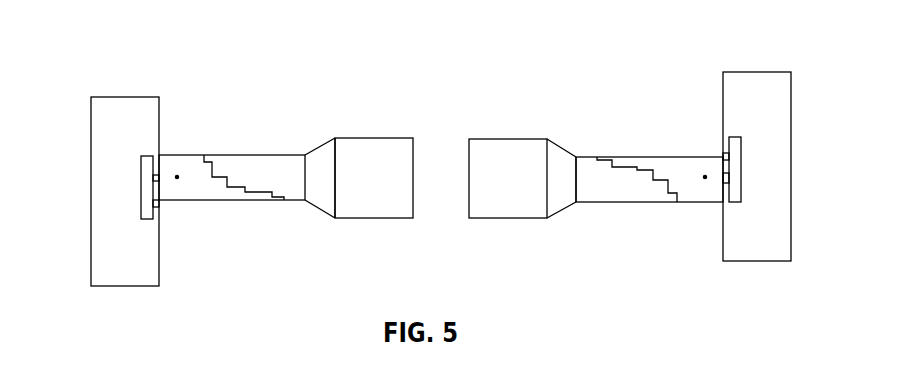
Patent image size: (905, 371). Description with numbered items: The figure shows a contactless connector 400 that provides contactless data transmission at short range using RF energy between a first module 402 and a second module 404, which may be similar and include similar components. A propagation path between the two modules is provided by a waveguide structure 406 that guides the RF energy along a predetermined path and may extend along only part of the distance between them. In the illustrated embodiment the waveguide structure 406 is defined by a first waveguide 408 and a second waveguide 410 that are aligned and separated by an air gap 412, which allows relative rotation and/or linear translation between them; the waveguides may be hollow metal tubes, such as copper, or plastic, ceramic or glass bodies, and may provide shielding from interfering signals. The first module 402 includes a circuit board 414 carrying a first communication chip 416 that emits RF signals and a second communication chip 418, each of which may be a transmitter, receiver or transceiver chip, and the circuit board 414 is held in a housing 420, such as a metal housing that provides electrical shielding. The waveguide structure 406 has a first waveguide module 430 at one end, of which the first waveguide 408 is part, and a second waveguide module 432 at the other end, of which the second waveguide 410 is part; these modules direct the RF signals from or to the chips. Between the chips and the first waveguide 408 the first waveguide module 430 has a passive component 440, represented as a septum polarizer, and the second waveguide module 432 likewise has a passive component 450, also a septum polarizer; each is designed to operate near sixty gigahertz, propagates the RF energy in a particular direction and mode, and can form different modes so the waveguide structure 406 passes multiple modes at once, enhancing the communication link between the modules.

The contactless connector 400 is at (543, 57).
The first module 402 is at (147, 59).
The second module 404 is at (756, 54).
The waveguide structure 406 is at (358, 248).
The first waveguide 408 is at (293, 126).
The second waveguide 410 is at (568, 136).
The air gap 412 is at (438, 161).
The circuit board 414 is at (143, 192).
The first communication chip 416 is at (158, 204).
The second communication chip 418 is at (158, 178).
The housing 420 is at (91, 165).
The first waveguide module 430 is at (262, 211).
The second waveguide module 432 is at (622, 226).
The passive component 440 is at (218, 185).
The passive component 450 is at (680, 162).